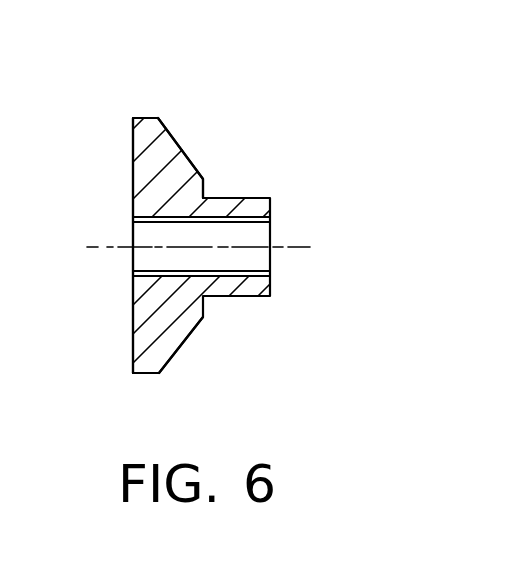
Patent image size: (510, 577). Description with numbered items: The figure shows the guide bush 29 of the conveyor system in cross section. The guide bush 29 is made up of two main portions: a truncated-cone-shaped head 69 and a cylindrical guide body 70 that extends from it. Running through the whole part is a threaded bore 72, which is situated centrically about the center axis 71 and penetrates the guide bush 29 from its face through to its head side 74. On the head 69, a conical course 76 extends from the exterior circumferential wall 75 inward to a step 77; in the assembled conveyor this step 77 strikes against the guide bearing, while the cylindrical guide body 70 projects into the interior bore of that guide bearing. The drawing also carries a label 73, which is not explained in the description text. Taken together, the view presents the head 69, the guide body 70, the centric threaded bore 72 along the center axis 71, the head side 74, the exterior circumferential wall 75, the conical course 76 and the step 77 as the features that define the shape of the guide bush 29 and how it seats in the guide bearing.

The guide bush 29 is at (147, 128).
The truncated-cone-shaped head 69 is at (140, 175).
The cylindrical guide body 70 is at (253, 291).
The center axis 71 is at (98, 248).
The threaded bore 72 is at (258, 229).
The bore wall 73 is at (271, 282).
The head side 74 is at (132, 345).
The exterior circumferential wall 75 is at (148, 375).
The conical course 76 is at (182, 343).
The step 77 is at (203, 192).